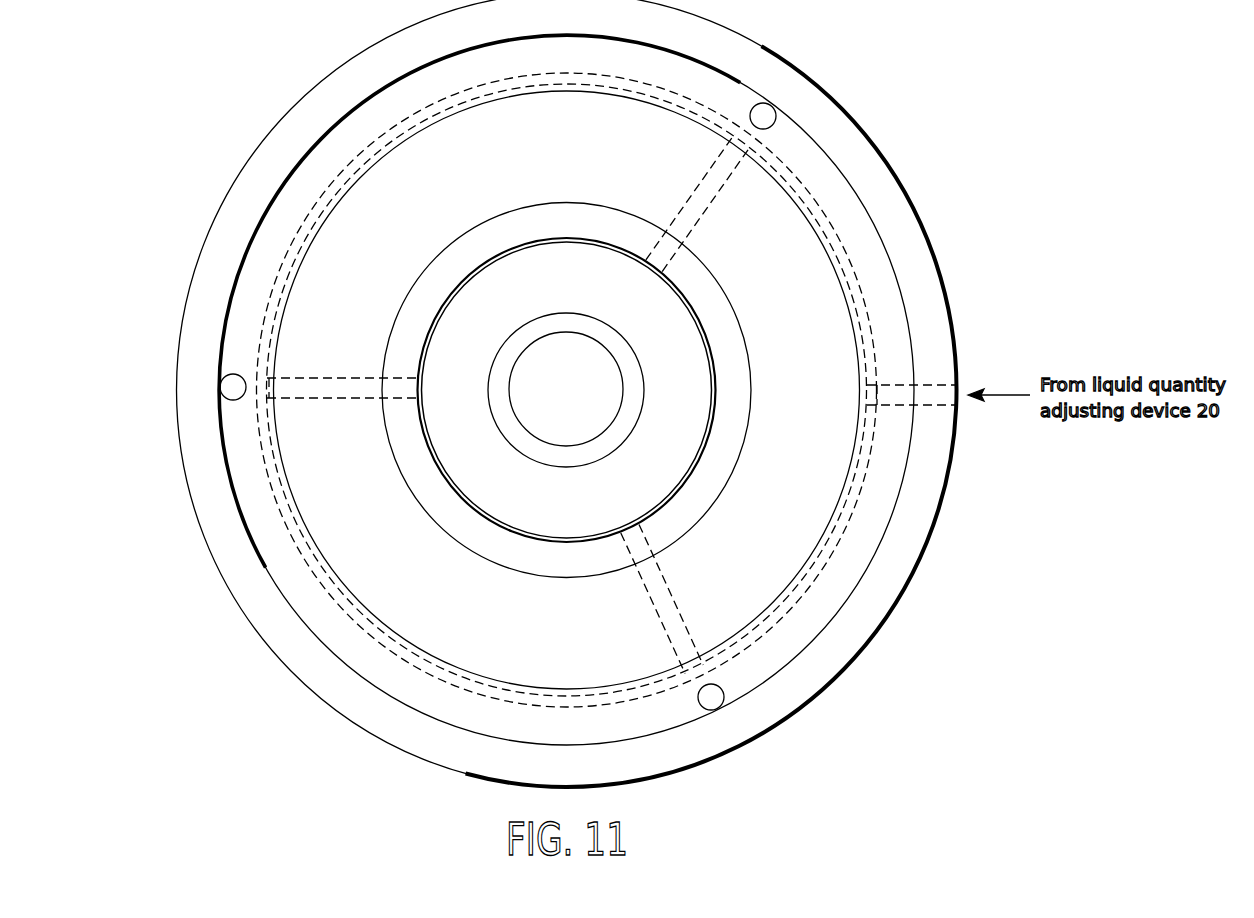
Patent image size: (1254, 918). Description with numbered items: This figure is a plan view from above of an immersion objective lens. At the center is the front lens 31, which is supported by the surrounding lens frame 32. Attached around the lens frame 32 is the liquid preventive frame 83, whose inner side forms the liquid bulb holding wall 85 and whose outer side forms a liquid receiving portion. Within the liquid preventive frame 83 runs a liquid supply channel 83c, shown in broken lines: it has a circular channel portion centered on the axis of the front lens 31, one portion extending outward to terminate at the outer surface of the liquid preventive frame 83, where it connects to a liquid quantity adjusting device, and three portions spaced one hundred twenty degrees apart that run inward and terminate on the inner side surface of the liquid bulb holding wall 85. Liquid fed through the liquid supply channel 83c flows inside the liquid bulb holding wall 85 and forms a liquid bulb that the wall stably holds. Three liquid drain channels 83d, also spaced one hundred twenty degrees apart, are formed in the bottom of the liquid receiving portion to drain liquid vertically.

The front lens 31 is at (590, 347).
The lens frame 32 is at (563, 240).
The liquid preventive frame 83 is at (920, 219).
The liquid supply channel 83c is at (353, 378).
The liquid drain channels 83d is at (227, 388).
The liquid bulb holding wall 85 is at (747, 342).